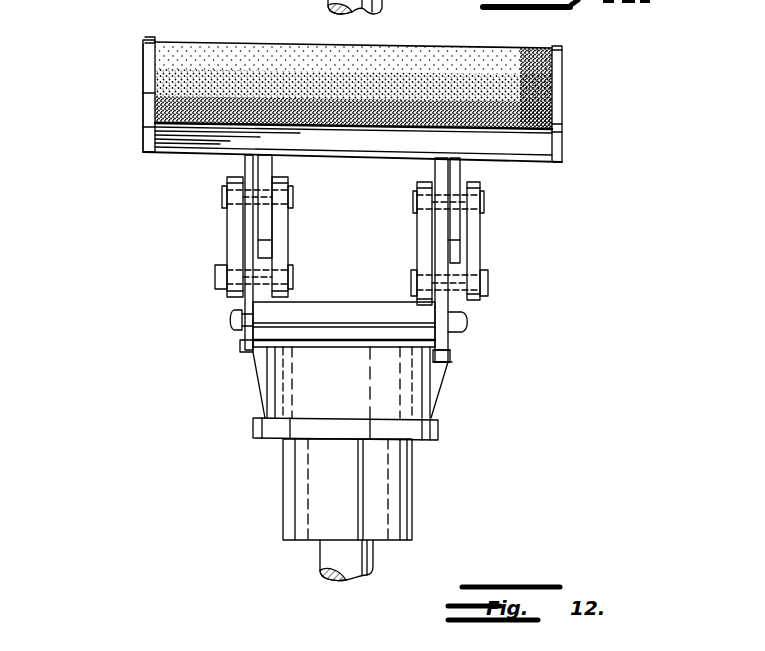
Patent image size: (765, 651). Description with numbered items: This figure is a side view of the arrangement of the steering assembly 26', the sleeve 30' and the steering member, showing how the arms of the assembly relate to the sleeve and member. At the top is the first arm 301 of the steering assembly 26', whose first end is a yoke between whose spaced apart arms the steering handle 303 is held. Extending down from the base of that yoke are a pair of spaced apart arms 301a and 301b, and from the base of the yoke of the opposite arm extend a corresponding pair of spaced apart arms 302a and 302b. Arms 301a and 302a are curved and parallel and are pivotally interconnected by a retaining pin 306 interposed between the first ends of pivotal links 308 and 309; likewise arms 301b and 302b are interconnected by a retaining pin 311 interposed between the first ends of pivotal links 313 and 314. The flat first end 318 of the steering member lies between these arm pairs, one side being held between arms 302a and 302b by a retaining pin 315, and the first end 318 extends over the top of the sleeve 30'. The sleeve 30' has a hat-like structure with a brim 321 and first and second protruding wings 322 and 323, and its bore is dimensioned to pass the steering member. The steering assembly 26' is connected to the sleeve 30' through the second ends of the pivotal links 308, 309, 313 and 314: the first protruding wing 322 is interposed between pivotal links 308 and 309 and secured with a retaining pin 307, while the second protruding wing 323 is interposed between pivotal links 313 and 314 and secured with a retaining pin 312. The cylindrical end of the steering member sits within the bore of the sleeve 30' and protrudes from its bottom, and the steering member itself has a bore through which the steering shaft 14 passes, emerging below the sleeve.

The steering assembly 26' is at (312, 81).
The steering handle 303 is at (157, 72).
The first member or arm 301 is at (143, 93).
The spaced apart arm 302a is at (245, 164).
The spaced apart arm 301a is at (272, 163).
The spaced apart arm 302b is at (435, 172).
The spaced apart arm 301b is at (460, 168).
The retaining pin 306 is at (223, 200).
The pivotal link 308 is at (227, 238).
The pivotal link 309 is at (288, 229).
The retaining pin 307 is at (215, 275).
The retaining pin 315 is at (230, 318).
The retaining pin 311 is at (483, 198).
The pivotal link 313 is at (480, 238).
The pivotal link 314 is at (417, 245).
The retaining pin 312 is at (488, 278).
The first end of steering member 318 is at (270, 329).
The first protruding wing 322 is at (250, 376).
The second protruding wing 323 is at (453, 375).
The brim 321 is at (253, 423).
The sleeve 30' is at (495, 416).
The steering shaft 14 is at (320, 556).